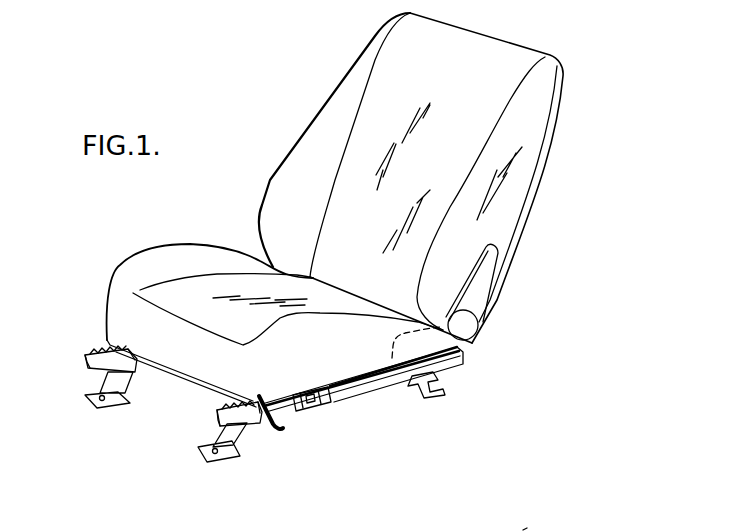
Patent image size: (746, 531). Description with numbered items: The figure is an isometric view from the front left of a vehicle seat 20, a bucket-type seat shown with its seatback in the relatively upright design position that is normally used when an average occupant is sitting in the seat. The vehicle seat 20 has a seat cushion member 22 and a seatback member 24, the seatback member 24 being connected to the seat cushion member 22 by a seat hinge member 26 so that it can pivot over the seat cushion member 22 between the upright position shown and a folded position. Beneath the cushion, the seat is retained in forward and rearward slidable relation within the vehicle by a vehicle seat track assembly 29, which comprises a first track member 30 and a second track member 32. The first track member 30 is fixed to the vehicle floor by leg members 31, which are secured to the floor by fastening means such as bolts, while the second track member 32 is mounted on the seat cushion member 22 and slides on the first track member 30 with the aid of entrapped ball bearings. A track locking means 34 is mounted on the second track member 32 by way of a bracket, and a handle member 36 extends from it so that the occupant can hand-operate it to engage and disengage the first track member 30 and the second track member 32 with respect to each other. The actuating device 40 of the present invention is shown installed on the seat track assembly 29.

The vehicle seat 20 is at (589, 109).
The seat cushion member 22 is at (113, 283).
The seatback member 24 is at (542, 167).
The seat hinge member 26 is at (487, 278).
The vehicle seat track assembly 29 is at (347, 395).
The first track member 30 is at (88, 360).
The leg members 31 is at (137, 393).
The second track member 32 is at (113, 347).
The track locking means 34 is at (317, 385).
The handle member 36 is at (268, 430).
The actuating device 40 is at (330, 397).